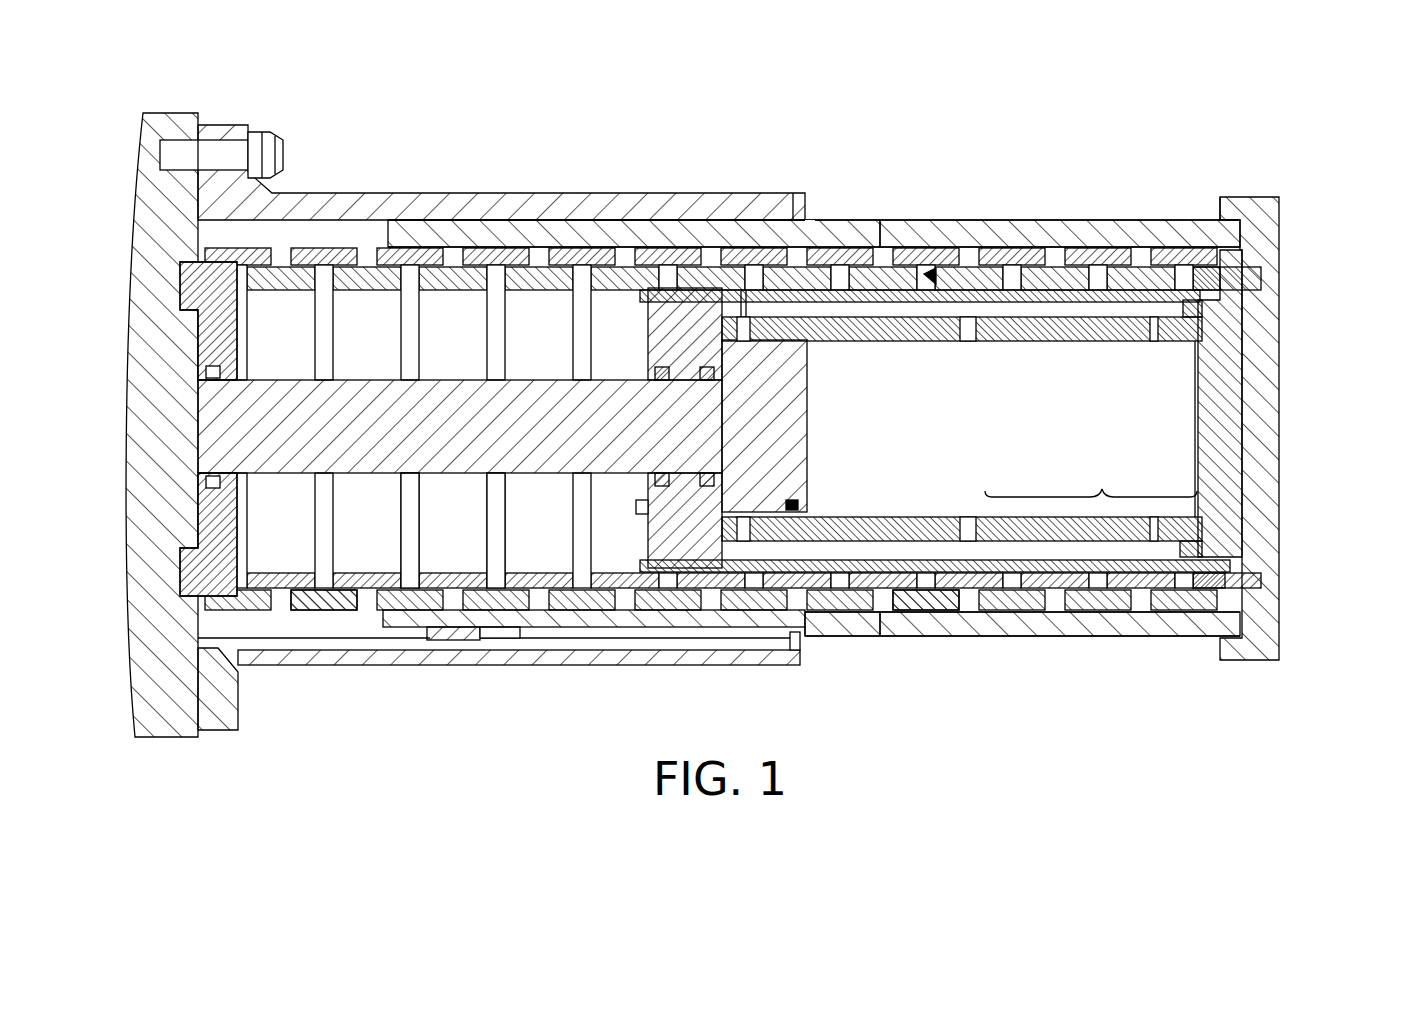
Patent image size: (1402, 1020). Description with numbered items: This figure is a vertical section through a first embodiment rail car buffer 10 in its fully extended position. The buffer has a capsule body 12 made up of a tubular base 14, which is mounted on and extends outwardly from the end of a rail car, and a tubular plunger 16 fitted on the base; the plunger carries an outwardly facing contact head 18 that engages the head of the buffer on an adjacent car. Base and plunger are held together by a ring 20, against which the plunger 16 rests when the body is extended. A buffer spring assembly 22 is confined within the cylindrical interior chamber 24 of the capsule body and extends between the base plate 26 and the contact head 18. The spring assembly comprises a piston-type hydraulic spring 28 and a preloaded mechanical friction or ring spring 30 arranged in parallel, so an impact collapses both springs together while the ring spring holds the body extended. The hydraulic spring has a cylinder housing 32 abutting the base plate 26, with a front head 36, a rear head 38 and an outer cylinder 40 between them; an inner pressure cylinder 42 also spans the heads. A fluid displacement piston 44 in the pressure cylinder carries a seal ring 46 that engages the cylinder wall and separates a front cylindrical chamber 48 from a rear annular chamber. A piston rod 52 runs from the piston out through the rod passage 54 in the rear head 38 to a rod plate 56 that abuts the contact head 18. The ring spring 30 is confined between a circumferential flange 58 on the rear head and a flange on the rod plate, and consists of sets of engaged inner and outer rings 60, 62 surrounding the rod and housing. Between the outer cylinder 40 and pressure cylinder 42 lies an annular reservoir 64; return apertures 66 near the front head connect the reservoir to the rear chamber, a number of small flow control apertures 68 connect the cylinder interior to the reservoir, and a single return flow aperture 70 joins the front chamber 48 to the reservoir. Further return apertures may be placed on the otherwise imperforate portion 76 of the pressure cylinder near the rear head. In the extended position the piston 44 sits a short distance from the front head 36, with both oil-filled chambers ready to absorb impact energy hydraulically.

The rail car buffer 10 is at (183, 758).
The capsule body 12 is at (744, 180).
The tubular base 14 is at (1045, 220).
The tubular plunger 16 is at (385, 193).
The contact head 18 is at (167, 113).
The ring 20 is at (440, 662).
The buffer spring assembly 22 is at (314, 608).
The cylindrical interior chamber 24 is at (870, 612).
The base plate 26 is at (1270, 330).
The hydraulic spring 28 is at (638, 518).
The ring spring 30 is at (329, 238).
The cylinder housing 32 is at (935, 278).
The front head 36 is at (648, 328).
The rear head 38 is at (1248, 462).
The outer cylinder 40 is at (937, 595).
The inner pressure cylinder 42 is at (880, 517).
The fluid displacement piston 44 is at (800, 383).
The seal ring 46 is at (798, 503).
The front cylindrical chamber 48 is at (1043, 424).
The piston rod 52 is at (455, 380).
The rod passage 54 is at (652, 478).
The rod plate 56 is at (240, 322).
The circumferential flange 58 is at (1218, 207).
The inner rings 60 is at (492, 578).
The outer rings 62 is at (510, 655).
The annular reservoir 64 is at (835, 300).
The return apertures 66 is at (791, 220).
The flow control apertures 68 is at (968, 341).
The return flow aperture 70 is at (1158, 341).
The imperforate portion 76 is at (1102, 488).